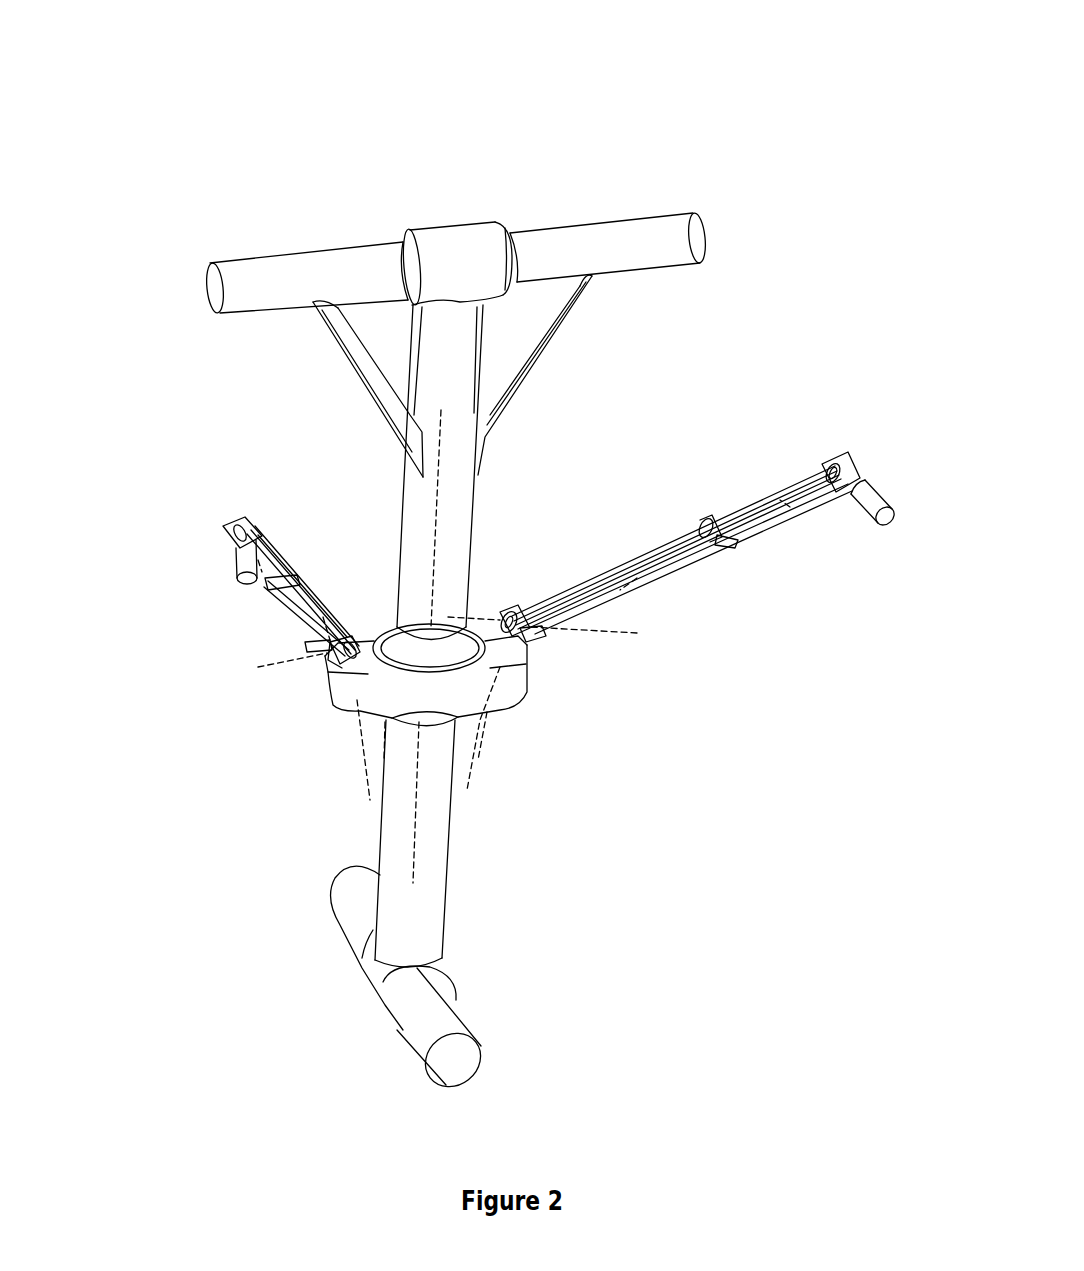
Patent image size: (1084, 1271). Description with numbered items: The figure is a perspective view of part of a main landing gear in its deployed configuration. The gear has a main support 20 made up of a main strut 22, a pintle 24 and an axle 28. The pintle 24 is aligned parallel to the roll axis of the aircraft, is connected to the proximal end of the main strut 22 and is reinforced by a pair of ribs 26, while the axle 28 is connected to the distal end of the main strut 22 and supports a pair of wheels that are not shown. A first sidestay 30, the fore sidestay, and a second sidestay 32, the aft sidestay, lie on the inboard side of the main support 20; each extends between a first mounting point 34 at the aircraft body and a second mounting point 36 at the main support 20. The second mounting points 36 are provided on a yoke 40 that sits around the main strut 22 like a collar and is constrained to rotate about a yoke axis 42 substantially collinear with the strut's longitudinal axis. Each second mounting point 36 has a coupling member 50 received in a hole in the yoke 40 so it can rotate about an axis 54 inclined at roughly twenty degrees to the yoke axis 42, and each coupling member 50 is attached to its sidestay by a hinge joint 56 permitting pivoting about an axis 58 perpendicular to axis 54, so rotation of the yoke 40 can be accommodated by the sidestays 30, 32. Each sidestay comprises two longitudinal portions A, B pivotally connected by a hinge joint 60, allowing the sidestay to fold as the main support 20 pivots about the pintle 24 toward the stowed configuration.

The main support 20 is at (417, 170).
The main strut 22 is at (392, 900).
The pintle 24 is at (577, 242).
The ribs 26 is at (523, 340).
The axle 28 is at (440, 1010).
The first sidestay 30 is at (808, 435).
The second sidestay 32 is at (183, 502).
The first mounting point 34 is at (877, 447).
The second mounting point 36 is at (352, 607).
The yoke 40 is at (462, 697).
The yoke axis 42 is at (412, 868).
The coupling member 50 is at (523, 620).
The axis 54 is at (360, 735).
The hinge joint 56 is at (308, 647).
The axis 58 is at (252, 670).
The hinge joint 60 is at (262, 592).
The longitudinal portion A is at (323, 617).
The longitudinal portion B is at (258, 560).